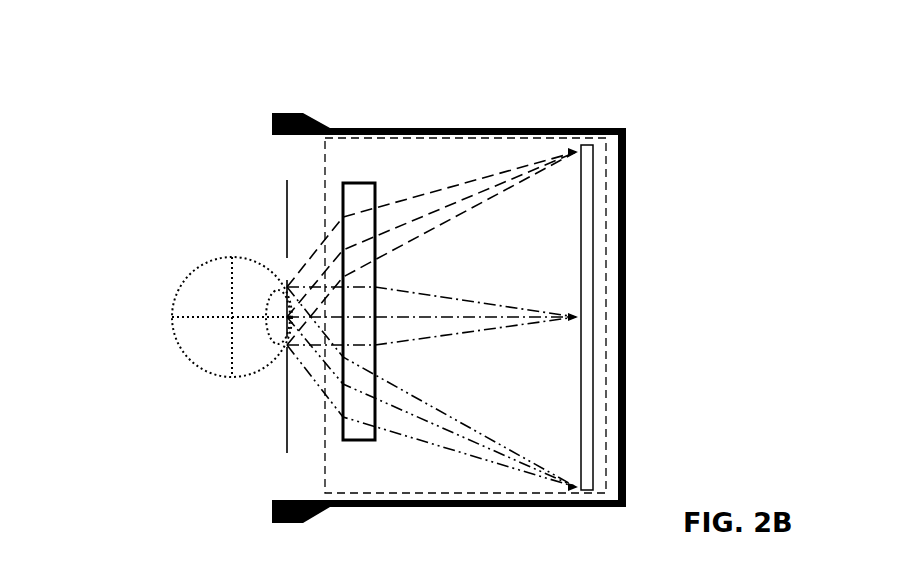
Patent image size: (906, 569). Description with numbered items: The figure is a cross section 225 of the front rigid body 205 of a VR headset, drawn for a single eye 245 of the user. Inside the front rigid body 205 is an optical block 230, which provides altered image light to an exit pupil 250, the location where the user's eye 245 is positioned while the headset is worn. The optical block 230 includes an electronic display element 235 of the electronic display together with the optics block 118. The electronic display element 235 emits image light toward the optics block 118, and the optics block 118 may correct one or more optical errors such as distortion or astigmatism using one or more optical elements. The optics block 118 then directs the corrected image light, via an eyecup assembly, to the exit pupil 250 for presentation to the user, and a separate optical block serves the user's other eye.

The cross section 225 is at (77, 26).
The front rigid body 205 is at (601, 124).
The optics block 118 is at (340, 192).
The electronic display element 235 is at (594, 244).
The eye 245 is at (202, 262).
The exit pupil 250 is at (279, 436).
The optical block 230 is at (322, 420).